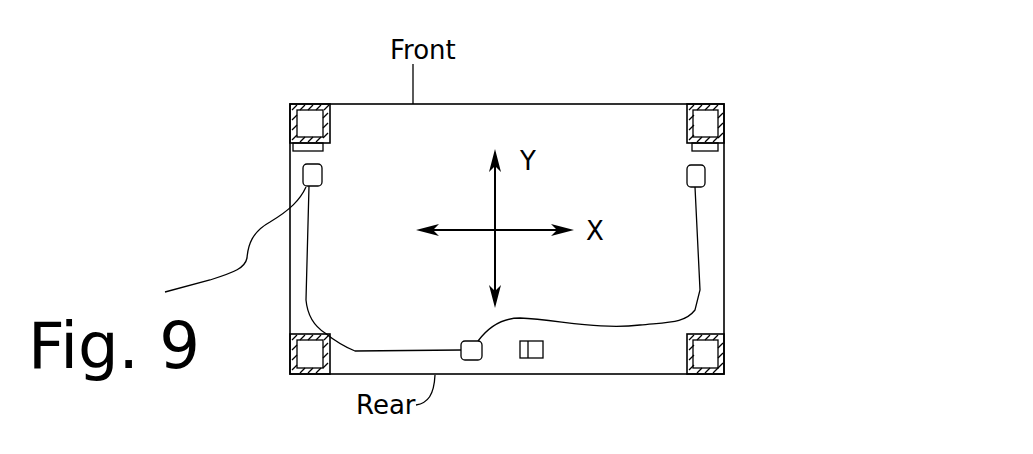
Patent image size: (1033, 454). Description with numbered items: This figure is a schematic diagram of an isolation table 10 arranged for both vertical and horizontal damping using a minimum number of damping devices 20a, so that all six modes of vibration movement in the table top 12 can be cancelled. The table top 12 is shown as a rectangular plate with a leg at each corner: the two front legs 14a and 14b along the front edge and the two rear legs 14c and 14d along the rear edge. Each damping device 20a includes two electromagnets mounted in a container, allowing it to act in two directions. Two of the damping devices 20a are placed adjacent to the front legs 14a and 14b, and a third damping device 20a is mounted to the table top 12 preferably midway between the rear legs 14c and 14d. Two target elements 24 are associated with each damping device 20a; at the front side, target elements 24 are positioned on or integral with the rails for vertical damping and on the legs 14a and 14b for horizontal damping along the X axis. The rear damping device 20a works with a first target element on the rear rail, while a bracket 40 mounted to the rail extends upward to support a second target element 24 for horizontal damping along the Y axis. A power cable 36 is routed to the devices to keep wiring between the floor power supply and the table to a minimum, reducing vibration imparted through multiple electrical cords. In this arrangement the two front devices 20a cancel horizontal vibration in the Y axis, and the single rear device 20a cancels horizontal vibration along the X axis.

The isolation table 10 is at (486, 93).
The table top 12 is at (725, 226).
The front leg 14a is at (290, 112).
The front leg 14b is at (724, 107).
The rear leg 14c is at (290, 353).
The rear leg 14d is at (724, 357).
The damping device 20a is at (303, 173).
The target element 24 is at (293, 155).
The power cable 36 is at (248, 245).
The bracket 40 is at (543, 350).